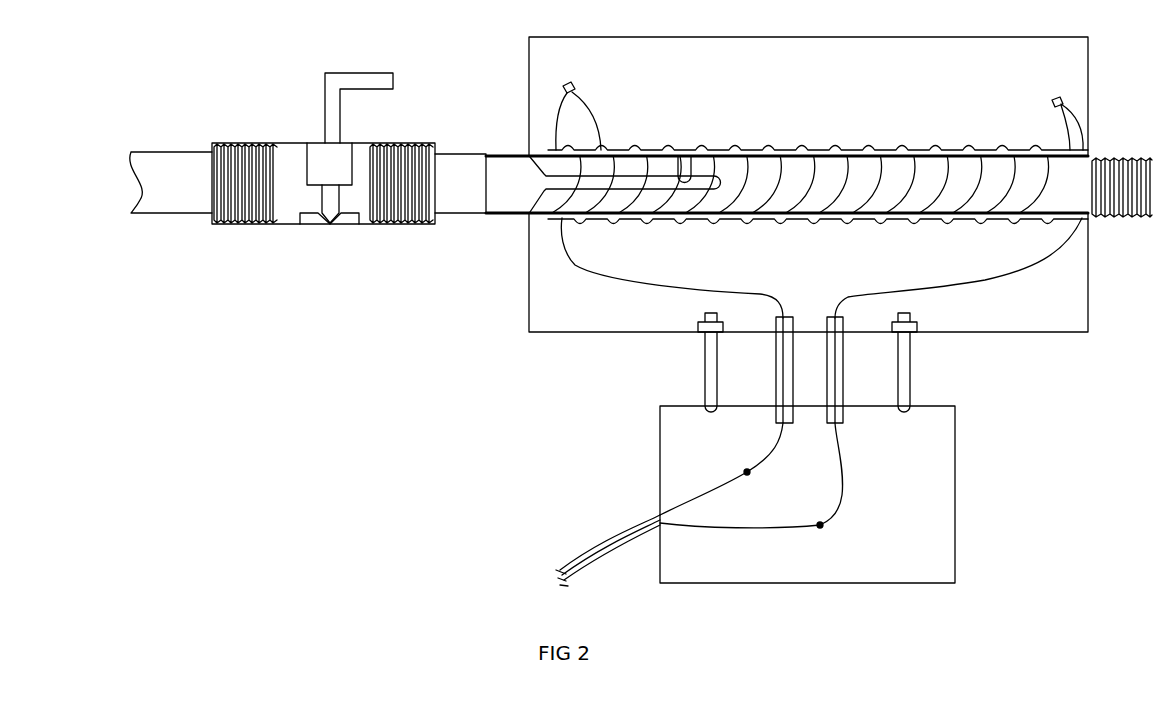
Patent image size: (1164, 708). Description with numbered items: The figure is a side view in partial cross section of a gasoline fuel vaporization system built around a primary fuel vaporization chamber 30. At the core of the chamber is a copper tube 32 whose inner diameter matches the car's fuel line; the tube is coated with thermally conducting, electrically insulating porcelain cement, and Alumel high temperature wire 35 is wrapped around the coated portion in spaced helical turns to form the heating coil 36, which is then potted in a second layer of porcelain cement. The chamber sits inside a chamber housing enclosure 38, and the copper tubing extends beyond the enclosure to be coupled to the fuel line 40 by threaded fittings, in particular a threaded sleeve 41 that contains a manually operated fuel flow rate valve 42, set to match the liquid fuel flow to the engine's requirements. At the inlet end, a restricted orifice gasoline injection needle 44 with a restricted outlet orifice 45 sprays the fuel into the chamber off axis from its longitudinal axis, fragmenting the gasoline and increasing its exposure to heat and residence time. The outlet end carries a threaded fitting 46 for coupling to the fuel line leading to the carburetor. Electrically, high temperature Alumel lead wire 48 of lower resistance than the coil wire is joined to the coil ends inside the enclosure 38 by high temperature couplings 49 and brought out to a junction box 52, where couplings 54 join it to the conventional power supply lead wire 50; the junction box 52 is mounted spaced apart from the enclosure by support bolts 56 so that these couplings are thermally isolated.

The primary fuel vaporization chamber 30 is at (783, 116).
The tube 32 is at (457, 153).
The high temperature wire 35 is at (713, 150).
The heating coil 36 is at (897, 224).
The chamber housing enclosure 38 is at (1020, 335).
The supply pipe 40 is at (173, 152).
The threaded sleeve 41 is at (385, 226).
The fuel flow rate valve 42 is at (353, 72).
The gasoline injection needle 44 is at (600, 182).
The restricted outlet orifice 45 is at (678, 153).
The threaded fitting 46 is at (1120, 158).
The lead wire 48 is at (665, 287).
The couplings 49 is at (580, 85).
The power supply lead wire 50 is at (597, 548).
The junction box 52 is at (957, 515).
The couplings 54 is at (750, 473).
The support bolts 56 is at (703, 375).